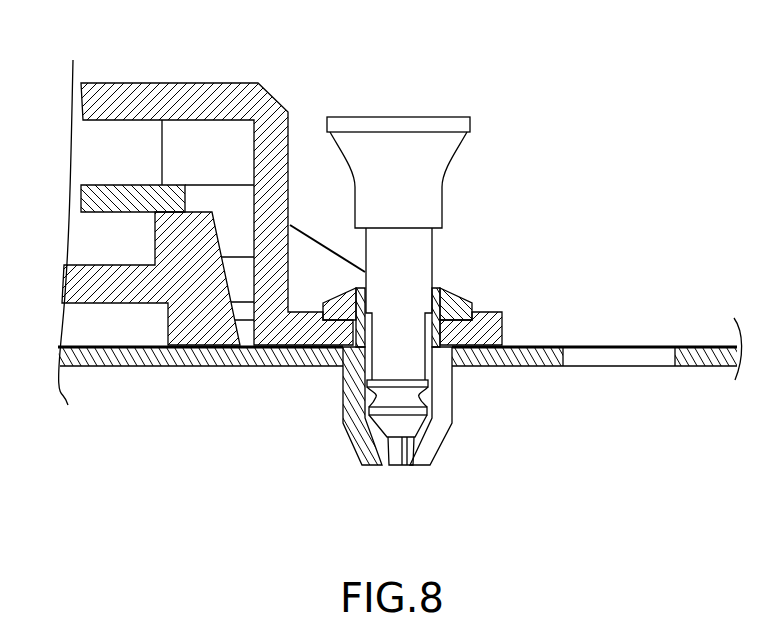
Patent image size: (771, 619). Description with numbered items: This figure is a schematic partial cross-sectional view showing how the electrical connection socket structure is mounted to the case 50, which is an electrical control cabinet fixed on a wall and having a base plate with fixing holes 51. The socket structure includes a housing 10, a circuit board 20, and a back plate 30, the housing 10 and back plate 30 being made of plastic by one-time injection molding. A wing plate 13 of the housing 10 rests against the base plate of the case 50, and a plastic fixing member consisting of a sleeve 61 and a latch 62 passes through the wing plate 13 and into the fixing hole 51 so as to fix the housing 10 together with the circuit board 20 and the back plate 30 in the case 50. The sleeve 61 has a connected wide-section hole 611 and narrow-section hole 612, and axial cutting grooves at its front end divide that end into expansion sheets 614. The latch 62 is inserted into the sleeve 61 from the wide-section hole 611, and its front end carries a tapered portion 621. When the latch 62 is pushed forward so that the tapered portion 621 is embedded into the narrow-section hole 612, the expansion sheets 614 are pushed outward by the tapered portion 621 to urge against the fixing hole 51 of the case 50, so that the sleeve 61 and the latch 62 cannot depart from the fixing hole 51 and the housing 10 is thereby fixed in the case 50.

The housing 10 is at (150, 98).
The wing plate 13 is at (502, 323).
The circuit board 20 is at (108, 185).
The back plate 30 is at (125, 290).
The case 50 is at (223, 352).
The fixing hole 51 is at (621, 347).
The sleeve 61 is at (457, 297).
The latch 62 is at (402, 125).
The wide-section hole 611 is at (425, 398).
The narrow-section hole 612 is at (388, 450).
The expansion sheet 614 is at (363, 446).
The tapered portion 621 is at (408, 425).